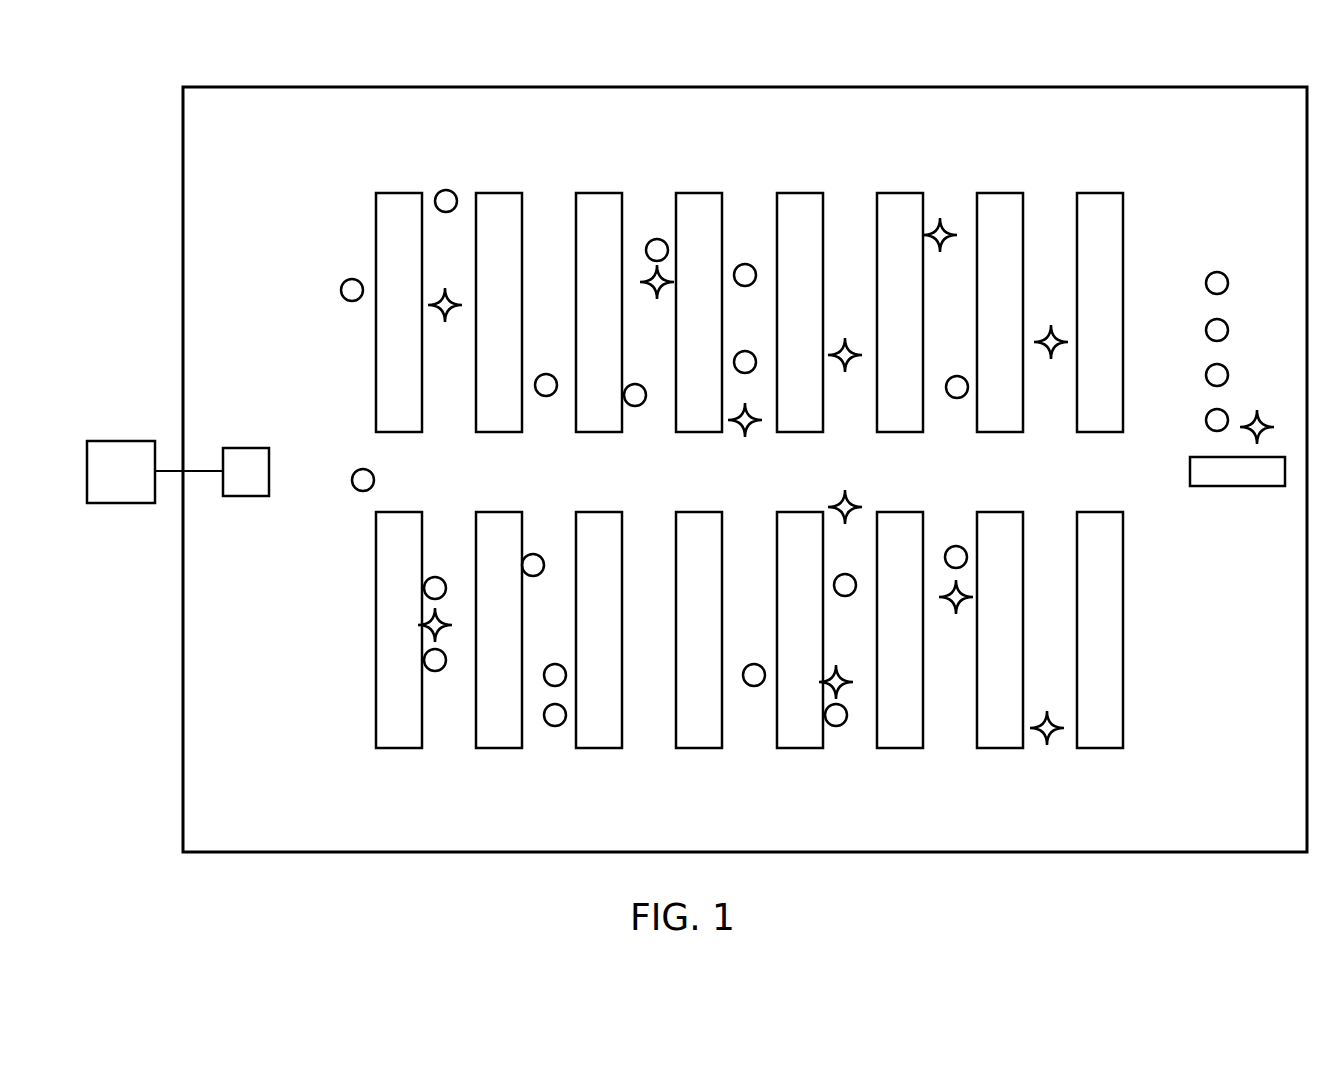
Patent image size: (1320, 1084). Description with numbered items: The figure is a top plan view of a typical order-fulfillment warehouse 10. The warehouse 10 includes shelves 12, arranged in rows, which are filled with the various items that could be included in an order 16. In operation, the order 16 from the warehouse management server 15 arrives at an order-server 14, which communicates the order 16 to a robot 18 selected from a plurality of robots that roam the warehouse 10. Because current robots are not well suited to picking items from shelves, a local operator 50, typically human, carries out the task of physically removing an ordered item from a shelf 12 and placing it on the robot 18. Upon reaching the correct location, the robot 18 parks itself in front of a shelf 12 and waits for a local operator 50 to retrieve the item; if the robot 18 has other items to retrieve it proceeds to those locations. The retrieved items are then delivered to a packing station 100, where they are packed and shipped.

The order-fulfillment warehouse 10 is at (299, 184).
The shelves 12 is at (376, 670).
The order-server 14 is at (246, 497).
The warehouse management server 15 is at (121, 503).
The order 16 is at (197, 469).
The robot 18 is at (341, 290).
The local operator 50 is at (445, 322).
The packing station 100 is at (1237, 486).